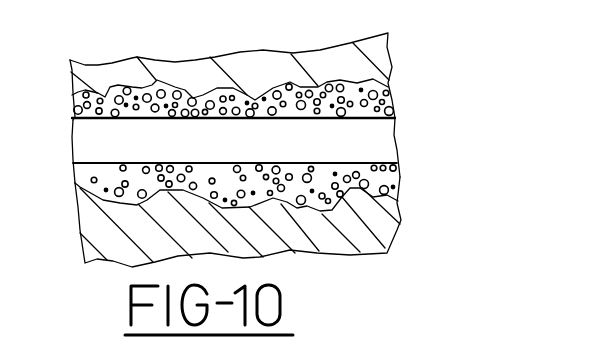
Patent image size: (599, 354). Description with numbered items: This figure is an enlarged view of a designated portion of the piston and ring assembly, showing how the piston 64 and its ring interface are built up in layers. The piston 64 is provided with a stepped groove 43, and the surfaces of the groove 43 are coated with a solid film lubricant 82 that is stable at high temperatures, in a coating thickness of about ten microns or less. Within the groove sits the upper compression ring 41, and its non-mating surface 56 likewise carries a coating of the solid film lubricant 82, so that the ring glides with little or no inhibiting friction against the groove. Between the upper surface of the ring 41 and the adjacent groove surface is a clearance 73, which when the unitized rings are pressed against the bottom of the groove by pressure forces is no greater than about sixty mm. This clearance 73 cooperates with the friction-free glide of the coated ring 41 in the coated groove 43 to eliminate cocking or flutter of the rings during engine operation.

The piston 64 is at (267, 67).
The stepped groove 43 is at (118, 124).
The clearance 73 is at (195, 52).
The non-mating surface 56 is at (222, 208).
The solid film lubricant 82 is at (322, 178).
The upper compression ring 41 is at (327, 228).